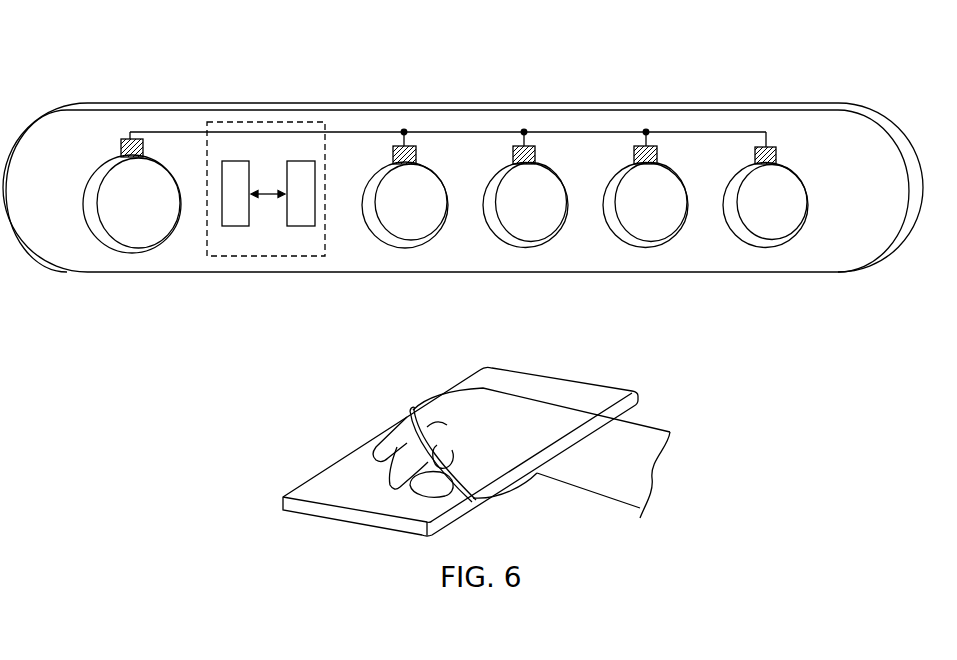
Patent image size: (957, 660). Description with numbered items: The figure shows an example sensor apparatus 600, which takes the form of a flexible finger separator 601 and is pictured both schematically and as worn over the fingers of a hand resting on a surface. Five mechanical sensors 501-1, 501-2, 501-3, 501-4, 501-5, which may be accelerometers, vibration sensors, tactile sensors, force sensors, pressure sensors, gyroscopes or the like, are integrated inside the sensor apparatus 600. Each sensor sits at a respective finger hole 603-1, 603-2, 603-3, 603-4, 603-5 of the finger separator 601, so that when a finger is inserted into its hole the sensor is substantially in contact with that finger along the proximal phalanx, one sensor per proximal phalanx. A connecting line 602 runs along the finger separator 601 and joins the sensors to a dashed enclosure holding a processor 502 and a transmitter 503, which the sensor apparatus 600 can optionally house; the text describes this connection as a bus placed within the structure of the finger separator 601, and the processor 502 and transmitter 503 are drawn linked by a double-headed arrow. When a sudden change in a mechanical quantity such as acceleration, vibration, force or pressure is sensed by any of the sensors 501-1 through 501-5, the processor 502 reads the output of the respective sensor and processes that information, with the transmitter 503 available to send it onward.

The sensor apparatus 600 is at (62, 57).
The finger separator 601 is at (263, 110).
The conductor 602 is at (580, 132).
The mechanical sensor 501-1 is at (126, 139).
The mechanical sensor 501-2 is at (408, 146).
The mechanical sensor 501-3 is at (530, 146).
The mechanical sensor 501-4 is at (652, 146).
The mechanical sensor 501-5 is at (768, 147).
The finger hole 603-1 is at (133, 253).
The finger hole 603-2 is at (404, 248).
The finger hole 603-3 is at (527, 248).
The finger hole 603-4 is at (647, 248).
The finger hole 603-5 is at (767, 248).
The transmitter 503 is at (237, 227).
The processor 502 is at (302, 227).